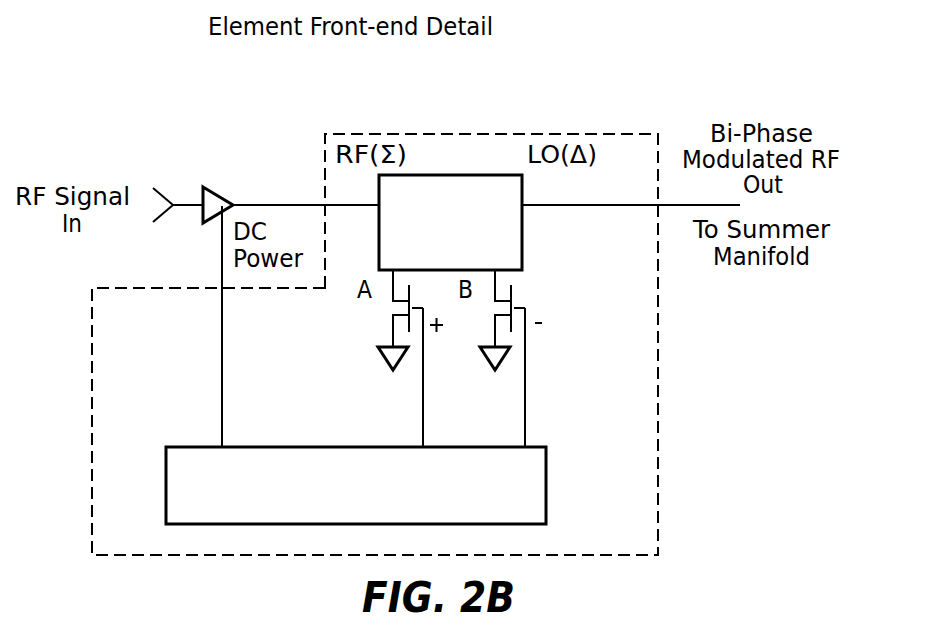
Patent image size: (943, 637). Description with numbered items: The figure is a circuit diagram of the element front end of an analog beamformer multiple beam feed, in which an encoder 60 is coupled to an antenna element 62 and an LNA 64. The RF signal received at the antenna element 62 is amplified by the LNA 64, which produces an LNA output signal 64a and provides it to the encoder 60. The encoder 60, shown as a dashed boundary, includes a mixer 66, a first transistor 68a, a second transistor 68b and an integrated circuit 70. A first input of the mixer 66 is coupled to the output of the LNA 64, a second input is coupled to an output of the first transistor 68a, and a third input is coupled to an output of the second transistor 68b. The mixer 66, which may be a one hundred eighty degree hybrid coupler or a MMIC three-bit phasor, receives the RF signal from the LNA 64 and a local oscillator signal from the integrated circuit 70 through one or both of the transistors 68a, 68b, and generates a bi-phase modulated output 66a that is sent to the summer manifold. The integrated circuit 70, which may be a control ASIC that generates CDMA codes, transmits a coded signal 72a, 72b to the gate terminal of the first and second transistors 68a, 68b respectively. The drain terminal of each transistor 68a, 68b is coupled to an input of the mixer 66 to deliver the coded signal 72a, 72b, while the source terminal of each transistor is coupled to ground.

The encoder 60 is at (397, 120).
The antenna element 62 is at (148, 187).
The LNA 64 is at (201, 210).
The LNA output signal 64a is at (282, 205).
The mixer 66 is at (465, 250).
The bi-phase modulated output 66a is at (603, 207).
The first transistor 68a is at (392, 309).
The second transistor 68b is at (520, 298).
The integrated circuit 70 is at (368, 515).
The coded signal 72a is at (426, 367).
The coded signal 72b is at (528, 367).